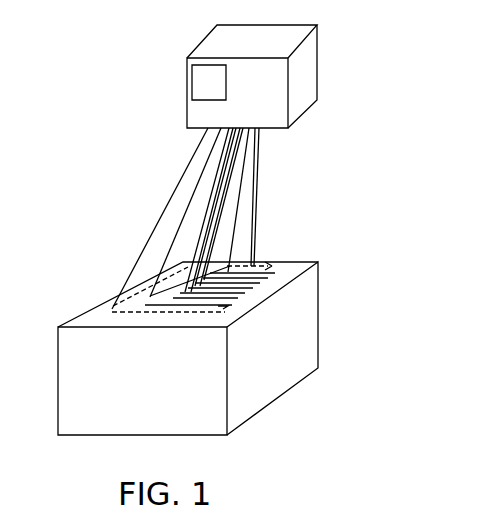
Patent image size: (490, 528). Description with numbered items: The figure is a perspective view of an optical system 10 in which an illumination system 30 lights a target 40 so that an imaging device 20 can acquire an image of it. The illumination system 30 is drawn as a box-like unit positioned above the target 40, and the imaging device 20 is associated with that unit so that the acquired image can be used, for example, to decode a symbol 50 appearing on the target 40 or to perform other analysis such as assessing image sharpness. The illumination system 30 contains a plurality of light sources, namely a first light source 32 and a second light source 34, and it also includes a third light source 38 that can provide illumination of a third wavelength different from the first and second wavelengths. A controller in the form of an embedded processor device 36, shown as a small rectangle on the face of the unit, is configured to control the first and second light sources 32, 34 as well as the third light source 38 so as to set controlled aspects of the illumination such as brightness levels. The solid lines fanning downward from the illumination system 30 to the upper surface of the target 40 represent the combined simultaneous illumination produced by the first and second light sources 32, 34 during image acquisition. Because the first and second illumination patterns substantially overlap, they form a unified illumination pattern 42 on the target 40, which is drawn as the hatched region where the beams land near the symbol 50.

The optical system 10 is at (88, 232).
The imaging device 20 is at (284, 76).
The illumination system 30 is at (309, 86).
The embedded processor device 36 is at (191, 80).
The first light source 32 is at (265, 130).
The second light source 34 is at (219, 207).
The third light source 38 is at (243, 200).
The target 40 is at (97, 316).
The illumination pattern 42 is at (232, 296).
The symbol 50 is at (236, 298).